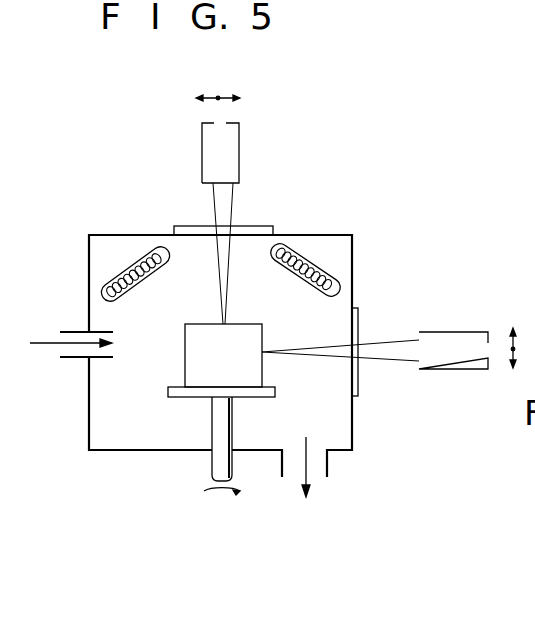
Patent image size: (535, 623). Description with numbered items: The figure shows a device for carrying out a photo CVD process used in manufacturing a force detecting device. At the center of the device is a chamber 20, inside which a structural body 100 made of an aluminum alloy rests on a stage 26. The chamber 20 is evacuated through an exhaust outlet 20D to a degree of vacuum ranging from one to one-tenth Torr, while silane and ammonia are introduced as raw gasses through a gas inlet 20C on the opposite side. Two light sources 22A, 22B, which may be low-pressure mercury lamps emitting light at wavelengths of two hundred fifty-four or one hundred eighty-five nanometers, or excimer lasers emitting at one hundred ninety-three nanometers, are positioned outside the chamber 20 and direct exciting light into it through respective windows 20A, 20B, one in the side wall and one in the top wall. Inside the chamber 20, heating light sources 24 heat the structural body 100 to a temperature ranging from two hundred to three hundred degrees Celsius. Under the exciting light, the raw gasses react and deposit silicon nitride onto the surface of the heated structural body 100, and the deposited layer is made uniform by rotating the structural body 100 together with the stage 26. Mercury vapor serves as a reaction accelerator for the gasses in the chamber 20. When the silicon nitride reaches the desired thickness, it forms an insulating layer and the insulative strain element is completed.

The chamber 20 is at (326, 235).
The window 20A is at (360, 388).
The window 20B is at (195, 228).
The gas inlet 20C is at (77, 359).
The exhaust outlet 20D is at (329, 460).
The light source 22A is at (448, 332).
The light source 22B is at (239, 148).
The heating light sources 24 is at (157, 275).
The stage 26 is at (233, 428).
The structural body 100 is at (240, 372).